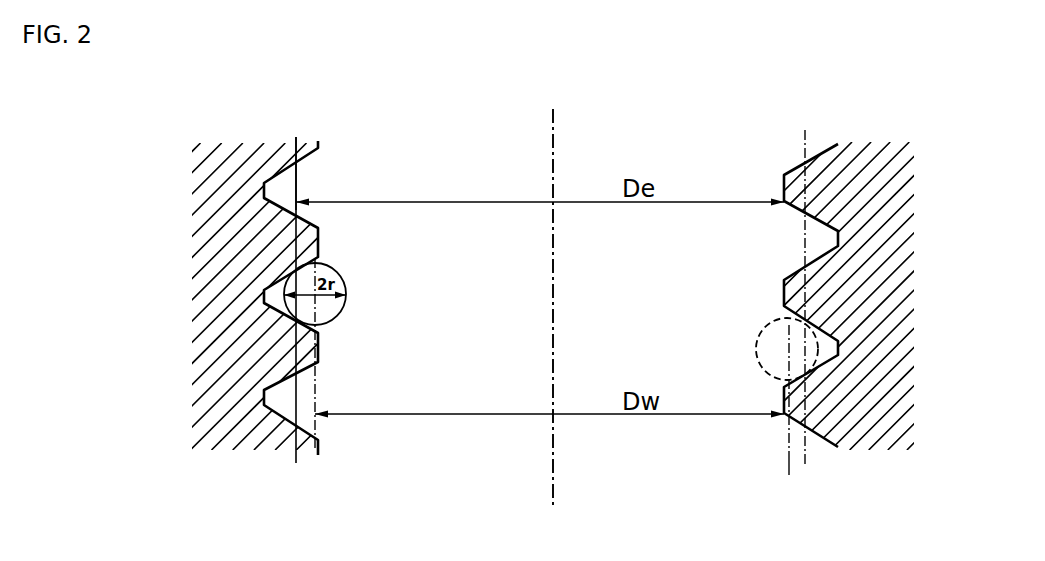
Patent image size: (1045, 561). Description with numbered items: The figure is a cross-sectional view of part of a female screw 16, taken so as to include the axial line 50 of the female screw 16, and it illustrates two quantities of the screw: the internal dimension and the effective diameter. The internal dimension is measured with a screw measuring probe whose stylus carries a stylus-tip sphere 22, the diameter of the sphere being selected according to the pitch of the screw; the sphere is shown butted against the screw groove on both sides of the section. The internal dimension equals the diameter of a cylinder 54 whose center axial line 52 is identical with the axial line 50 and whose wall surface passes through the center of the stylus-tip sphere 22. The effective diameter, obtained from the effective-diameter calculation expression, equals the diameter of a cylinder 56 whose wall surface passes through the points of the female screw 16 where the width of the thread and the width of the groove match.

The female screw 16 is at (884, 168).
The stylus-tip sphere 22 is at (338, 274).
The axial line 50 is at (552, 148).
The center axial line 52 is at (615, 295).
The cylinder 54 is at (789, 462).
The cylinder 56 is at (300, 187).